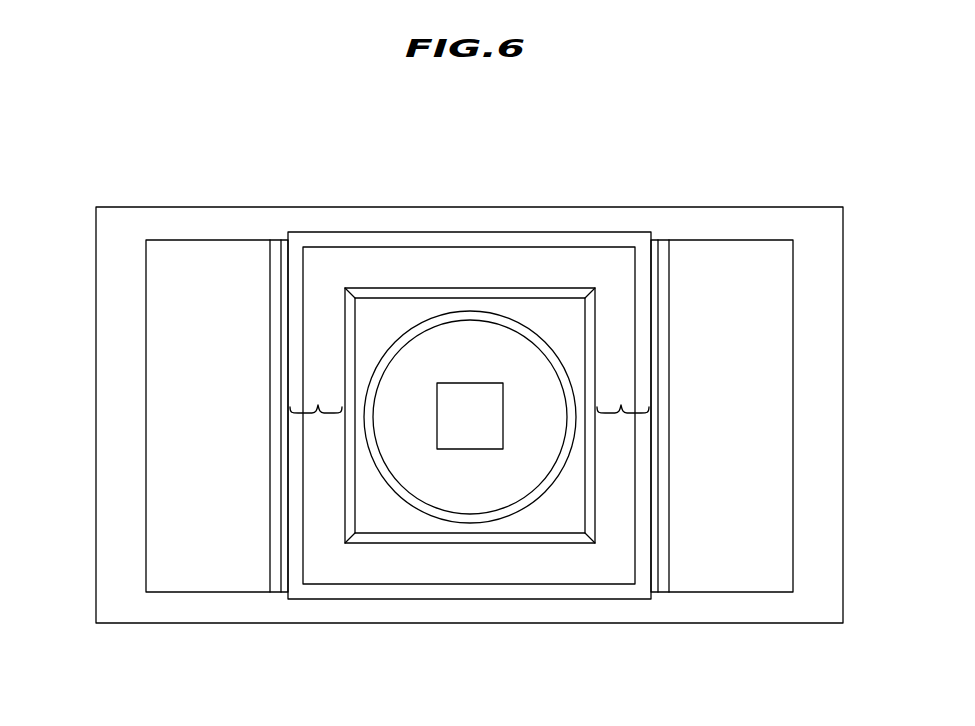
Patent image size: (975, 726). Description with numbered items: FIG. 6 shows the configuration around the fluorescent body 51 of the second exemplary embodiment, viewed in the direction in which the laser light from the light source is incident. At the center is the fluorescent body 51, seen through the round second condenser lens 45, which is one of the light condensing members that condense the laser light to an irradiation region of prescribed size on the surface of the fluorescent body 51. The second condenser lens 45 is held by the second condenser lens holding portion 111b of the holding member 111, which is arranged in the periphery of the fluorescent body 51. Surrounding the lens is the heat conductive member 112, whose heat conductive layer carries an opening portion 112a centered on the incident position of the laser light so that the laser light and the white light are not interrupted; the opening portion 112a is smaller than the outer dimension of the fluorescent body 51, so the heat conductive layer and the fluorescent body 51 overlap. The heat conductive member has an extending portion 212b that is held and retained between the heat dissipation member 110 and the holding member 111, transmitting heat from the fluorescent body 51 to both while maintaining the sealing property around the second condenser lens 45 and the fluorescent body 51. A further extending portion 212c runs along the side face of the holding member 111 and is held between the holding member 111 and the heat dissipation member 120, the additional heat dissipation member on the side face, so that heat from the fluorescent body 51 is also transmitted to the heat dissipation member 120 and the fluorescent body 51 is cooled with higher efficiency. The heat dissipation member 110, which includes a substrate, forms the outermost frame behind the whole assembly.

The heat dissipation member 110 is at (717, 228).
The holding member 111 is at (605, 246).
The second condenser lens holding portion 111b is at (618, 320).
The heat dissipation member 120 is at (211, 265).
The extending portion 212b is at (318, 404).
The extending portion 212c is at (285, 592).
The heat conductive member 112 is at (490, 483).
The opening portion 112a is at (467, 452).
The second condenser lens 45 is at (520, 323).
The fluorescent body 51 is at (465, 398).